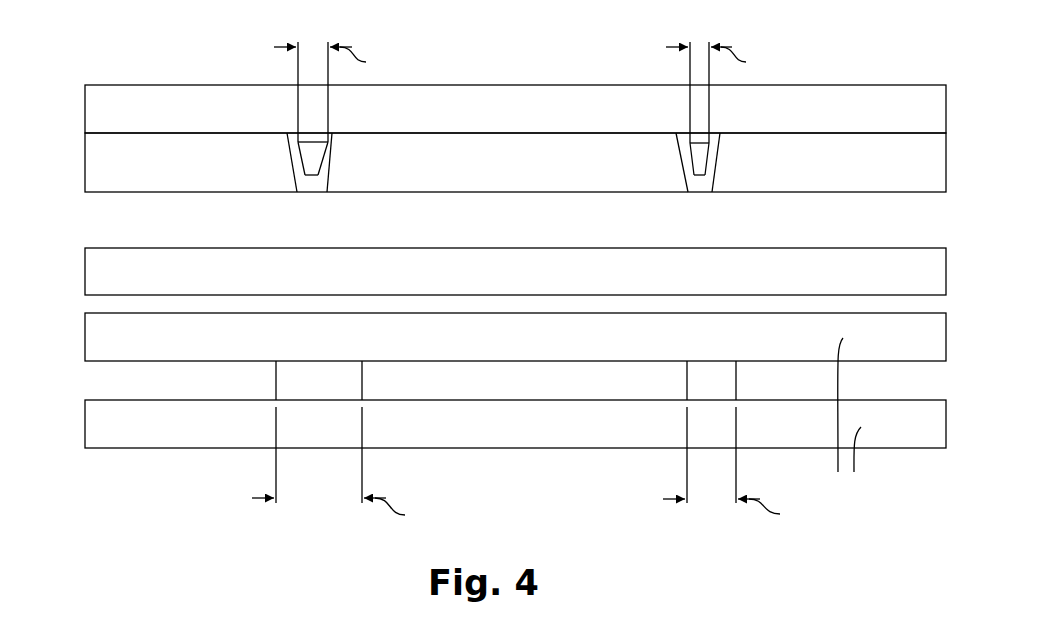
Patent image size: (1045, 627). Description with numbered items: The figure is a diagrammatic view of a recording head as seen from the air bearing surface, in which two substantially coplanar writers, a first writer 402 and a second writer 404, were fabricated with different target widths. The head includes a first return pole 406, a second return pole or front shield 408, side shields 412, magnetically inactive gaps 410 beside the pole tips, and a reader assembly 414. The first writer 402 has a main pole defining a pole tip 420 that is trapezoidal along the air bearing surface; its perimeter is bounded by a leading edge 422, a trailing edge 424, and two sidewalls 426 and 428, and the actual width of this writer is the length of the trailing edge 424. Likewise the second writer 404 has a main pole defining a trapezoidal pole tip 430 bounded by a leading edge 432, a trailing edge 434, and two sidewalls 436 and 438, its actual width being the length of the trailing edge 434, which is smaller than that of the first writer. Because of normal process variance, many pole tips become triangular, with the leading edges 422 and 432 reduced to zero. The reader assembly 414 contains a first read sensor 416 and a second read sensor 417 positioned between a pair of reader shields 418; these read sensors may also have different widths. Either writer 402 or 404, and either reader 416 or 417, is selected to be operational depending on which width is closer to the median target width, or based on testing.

The first writer 402 is at (281, 70).
The second writer 404 is at (671, 70).
The first return pole 406 is at (517, 282).
The second return pole 408 is at (517, 122).
The magnetically inactive gaps 410 is at (299, 177).
The side shields 412 is at (182, 174).
The reader assembly 414 is at (489, 418).
The first read sensor 416 is at (260, 413).
The second read sensor 417 is at (661, 413).
The reader shields 418 is at (847, 419).
The pole tip 420 is at (410, 155).
The leading edge 422 is at (316, 177).
The trailing edge 424 is at (311, 142).
The sidewall 426 is at (294, 158).
The sidewall 428 is at (327, 158).
The pole tip 430 is at (805, 157).
The leading edge 432 is at (704, 177).
The trailing edge 434 is at (706, 143).
The sidewall 436 is at (688, 156).
The sidewall 438 is at (712, 157).